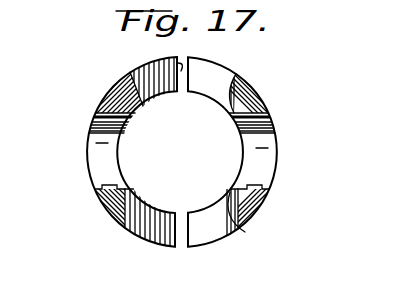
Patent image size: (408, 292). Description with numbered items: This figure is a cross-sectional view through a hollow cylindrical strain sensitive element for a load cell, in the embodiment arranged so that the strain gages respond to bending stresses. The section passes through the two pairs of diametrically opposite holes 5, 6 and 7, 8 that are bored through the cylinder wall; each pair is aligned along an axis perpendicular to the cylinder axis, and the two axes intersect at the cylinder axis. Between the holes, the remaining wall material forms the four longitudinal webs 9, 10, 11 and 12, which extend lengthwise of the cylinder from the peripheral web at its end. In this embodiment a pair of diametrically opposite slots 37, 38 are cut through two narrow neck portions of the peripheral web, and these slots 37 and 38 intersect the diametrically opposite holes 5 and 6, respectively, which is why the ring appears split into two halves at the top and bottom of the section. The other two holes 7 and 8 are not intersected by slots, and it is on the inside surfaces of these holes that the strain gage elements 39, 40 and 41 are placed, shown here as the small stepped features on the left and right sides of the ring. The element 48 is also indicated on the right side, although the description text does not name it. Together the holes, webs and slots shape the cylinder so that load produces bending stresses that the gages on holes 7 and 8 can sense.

The hole 5 is at (231, 236).
The hole 6 is at (236, 73).
The hole 7 is at (95, 134).
The hole 8 is at (256, 138).
The longitudinal web 9 is at (114, 97).
The longitudinal web 10 is at (122, 203).
The longitudinal web 11 is at (248, 200).
The longitudinal web 12 is at (255, 100).
The slot 37 is at (186, 246).
The slot 38 is at (179, 65).
The strain gage element 39 is at (104, 186).
The strain gage element 40 is at (96, 119).
The strain gage element 41 is at (253, 188).
The right upper step 48 is at (238, 113).